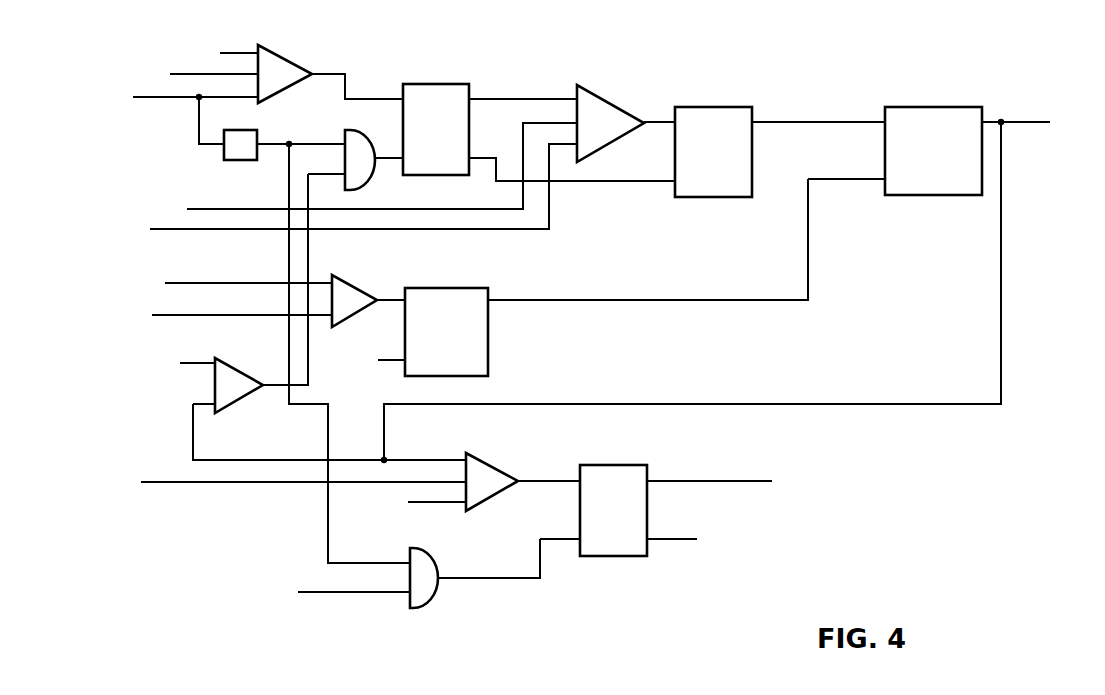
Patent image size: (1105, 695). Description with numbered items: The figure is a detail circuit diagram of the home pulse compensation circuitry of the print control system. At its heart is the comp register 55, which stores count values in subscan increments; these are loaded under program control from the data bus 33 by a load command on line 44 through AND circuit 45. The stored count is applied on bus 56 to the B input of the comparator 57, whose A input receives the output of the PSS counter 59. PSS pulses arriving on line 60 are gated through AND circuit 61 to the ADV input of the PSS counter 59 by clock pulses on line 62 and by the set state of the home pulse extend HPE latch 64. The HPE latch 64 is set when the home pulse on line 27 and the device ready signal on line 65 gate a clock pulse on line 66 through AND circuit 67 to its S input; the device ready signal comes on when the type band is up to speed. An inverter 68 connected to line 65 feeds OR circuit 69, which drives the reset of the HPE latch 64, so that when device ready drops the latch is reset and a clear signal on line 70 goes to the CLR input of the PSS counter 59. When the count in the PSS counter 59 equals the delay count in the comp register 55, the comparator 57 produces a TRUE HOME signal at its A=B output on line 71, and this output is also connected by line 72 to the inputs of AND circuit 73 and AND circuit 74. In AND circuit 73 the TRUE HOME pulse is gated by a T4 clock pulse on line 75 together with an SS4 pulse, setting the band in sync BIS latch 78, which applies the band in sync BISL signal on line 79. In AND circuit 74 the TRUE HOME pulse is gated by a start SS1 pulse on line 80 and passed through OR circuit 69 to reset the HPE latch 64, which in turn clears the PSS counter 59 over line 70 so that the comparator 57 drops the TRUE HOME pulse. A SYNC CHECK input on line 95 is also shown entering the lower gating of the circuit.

The home pulse line 27 is at (190, 74).
The clock pulse line 66 is at (240, 53).
The AND circuit 67 is at (290, 62).
The device ready signal line 65 is at (150, 99).
The inverter 68 is at (257, 131).
The OR circuit 69 is at (371, 142).
The home pulse extend (HPE) latch 64 is at (434, 84).
The AND circuit 61 is at (600, 99).
The clock pulse line 62 is at (470, 209).
The PSS pulse line 60 is at (549, 210).
The clear signal line 70 is at (631, 181).
The PSS counter 59 is at (714, 107).
The comparator 57 is at (925, 107).
The TRUE HOME output line 71 is at (1017, 122).
The TRUE HOME feedback line 72 is at (1002, 303).
The bus 56 is at (616, 300).
The comp register 55 is at (442, 288).
The data bus 33 is at (265, 283).
The load command line 44 is at (270, 312).
The AND circuit 45 is at (352, 287).
The AND circuit 74 is at (232, 369).
The start SS1 pulse line 80 is at (203, 363).
The T4 clock pulse line 75 is at (243, 482).
The AND circuit 73 is at (489, 466).
The band in sync (BIS) latch 78 is at (612, 465).
The BISL signal line 79 is at (726, 480).
The SYNC CHECK signal line 95 is at (378, 592).